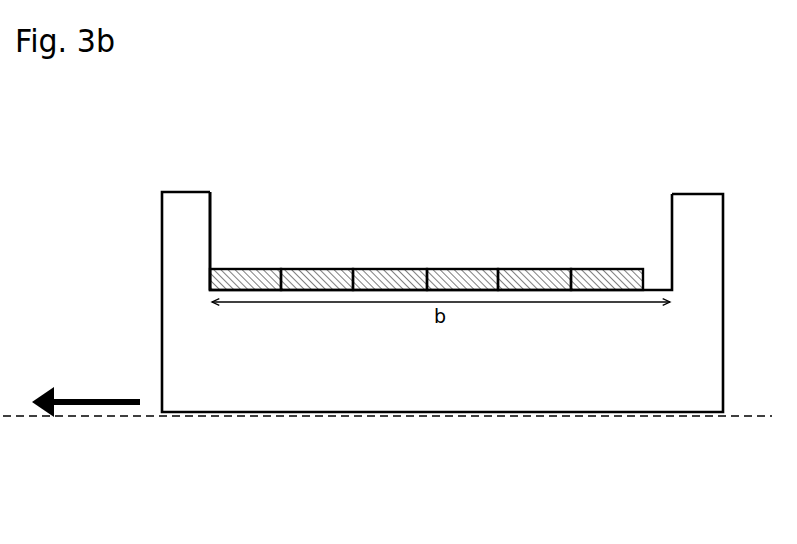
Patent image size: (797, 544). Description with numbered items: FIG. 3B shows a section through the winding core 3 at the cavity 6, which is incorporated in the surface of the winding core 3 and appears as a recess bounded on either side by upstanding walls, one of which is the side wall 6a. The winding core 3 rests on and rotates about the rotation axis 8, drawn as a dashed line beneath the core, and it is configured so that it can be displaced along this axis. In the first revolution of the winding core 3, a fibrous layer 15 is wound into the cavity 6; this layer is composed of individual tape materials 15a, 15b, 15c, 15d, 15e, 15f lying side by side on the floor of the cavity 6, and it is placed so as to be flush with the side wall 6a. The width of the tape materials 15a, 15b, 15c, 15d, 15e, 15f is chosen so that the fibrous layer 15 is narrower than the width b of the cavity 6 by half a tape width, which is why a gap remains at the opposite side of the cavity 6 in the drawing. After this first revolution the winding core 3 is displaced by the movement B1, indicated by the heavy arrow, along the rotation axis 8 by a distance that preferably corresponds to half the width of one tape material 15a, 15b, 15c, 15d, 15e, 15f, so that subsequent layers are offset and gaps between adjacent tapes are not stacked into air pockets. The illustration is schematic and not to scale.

The winding core 3 is at (418, 370).
The cavity 6 is at (458, 235).
The side wall of the cavity 6a is at (220, 231).
The fibrous layer 15 is at (426, 195).
The tape material 15a is at (245, 269).
The tape material 15b is at (317, 269).
The tape material 15c is at (390, 269).
The tape material 15d is at (462, 269).
The tape material 15e is at (534, 269).
The tape material 15f is at (607, 269).
The rotation axis 8 is at (740, 417).
The movement B1 is at (86, 388).